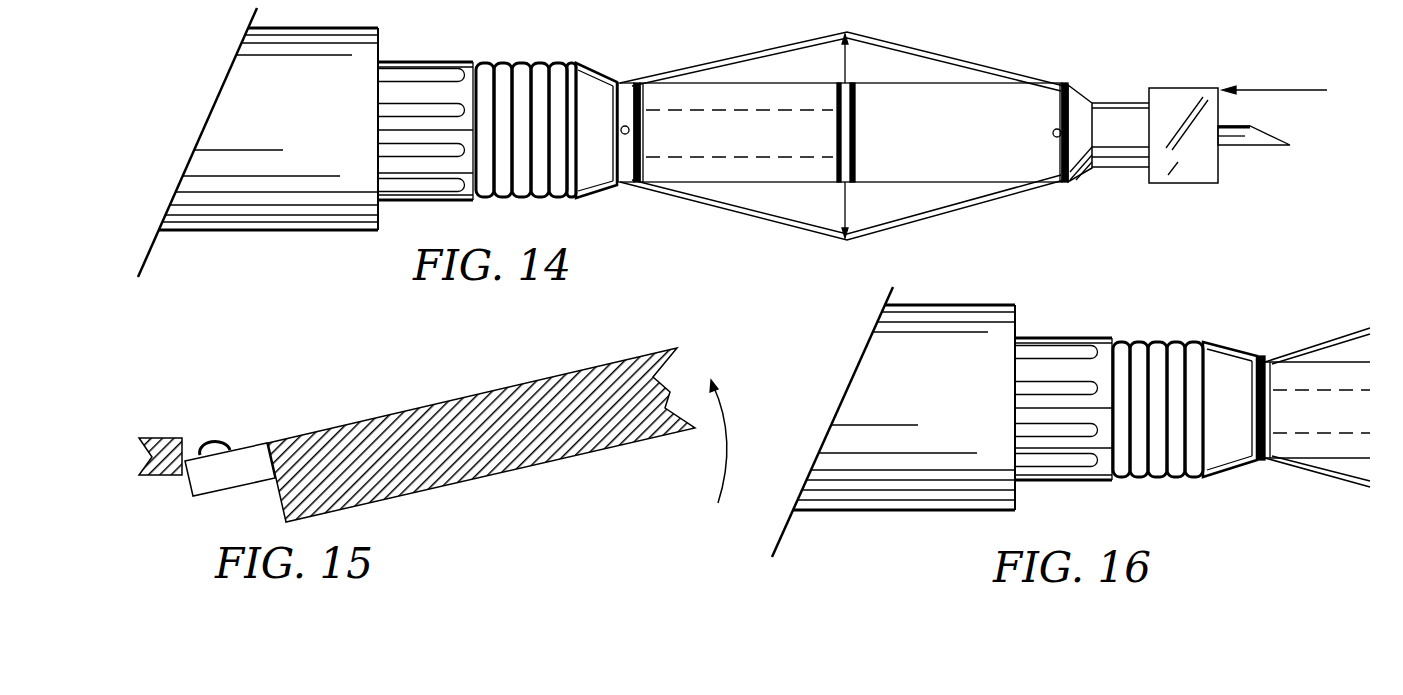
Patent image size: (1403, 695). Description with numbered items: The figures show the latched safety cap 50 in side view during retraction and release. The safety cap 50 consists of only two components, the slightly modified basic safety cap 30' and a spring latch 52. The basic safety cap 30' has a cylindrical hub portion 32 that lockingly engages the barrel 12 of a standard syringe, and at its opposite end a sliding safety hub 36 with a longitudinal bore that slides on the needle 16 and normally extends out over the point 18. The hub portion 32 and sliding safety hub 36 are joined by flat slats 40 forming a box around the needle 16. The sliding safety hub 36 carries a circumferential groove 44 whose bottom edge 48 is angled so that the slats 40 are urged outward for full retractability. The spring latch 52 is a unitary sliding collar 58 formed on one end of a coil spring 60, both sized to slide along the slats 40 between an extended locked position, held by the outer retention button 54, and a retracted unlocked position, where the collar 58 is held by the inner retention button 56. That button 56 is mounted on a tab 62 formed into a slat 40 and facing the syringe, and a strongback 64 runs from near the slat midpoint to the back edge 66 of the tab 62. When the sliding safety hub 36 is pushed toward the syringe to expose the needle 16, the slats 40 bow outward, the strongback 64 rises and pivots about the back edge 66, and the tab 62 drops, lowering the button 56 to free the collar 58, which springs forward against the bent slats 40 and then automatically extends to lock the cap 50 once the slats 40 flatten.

In FIG. 14, the barrel 12 is at (253, 103).
In FIG. 16, the barrel 12 is at (888, 385).
In FIG. 14, the hub portion 32 is at (415, 92).
In FIG. 16, the hub portion 32 is at (1053, 372).
In FIG. 14, the coil spring 60 is at (543, 150).
In FIG. 16, the coil spring 60 is at (1178, 430).
In FIG. 14, the sliding collar 58 is at (583, 85).
In FIG. 16, the sliding collar 58 is at (1220, 365).
In FIG. 14, the inner retention button 56 is at (622, 148).
In FIG. 15, the inner retention button 56 is at (212, 443).
In FIG. 14, the tab 62 is at (622, 128).
In FIG. 15, the tab 62 is at (233, 477).
In FIG. 14, the back edge 66 is at (637, 81).
In FIG. 15, the back edge 66 is at (274, 435).
In FIG. 16, the back edge 66 is at (1265, 358).
In FIG. 14, the strongback 64 is at (710, 130).
In FIG. 15, the strongback 64 is at (528, 460).
In FIG. 16, the strongback 64 is at (1312, 410).
In FIG. 14, the slat 40 is at (930, 110).
In FIG. 15, the slat 40 is at (196, 447).
In FIG. 16, the slat 40 is at (1313, 373).
In FIG. 14, the safety cap 50 is at (978, 48).
In FIG. 16, the safety cap 50 is at (1218, 510).
In FIG. 14, the basic safety cap 30' is at (741, 257).
In FIG. 16, the basic safety cap 30' is at (1359, 276).
In FIG. 14, the spring latch 52 is at (598, 208).
In FIG. 16, the spring latch 52 is at (1236, 486).
In FIG. 14, the outer retention button 54 is at (1053, 132).
In FIG. 14, the bottom edge 48 is at (1093, 104).
In FIG. 14, the circumferential groove 44 is at (1115, 181).
In FIG. 14, the sliding safety hub 36 is at (1173, 172).
In FIG. 14, the needle 16 is at (1237, 138).
In FIG. 14, the point 18 is at (1267, 130).